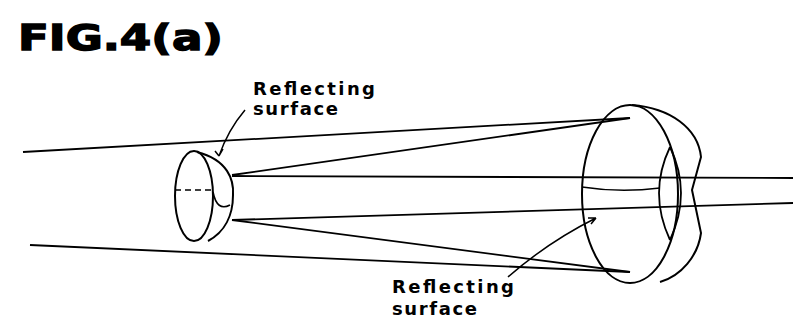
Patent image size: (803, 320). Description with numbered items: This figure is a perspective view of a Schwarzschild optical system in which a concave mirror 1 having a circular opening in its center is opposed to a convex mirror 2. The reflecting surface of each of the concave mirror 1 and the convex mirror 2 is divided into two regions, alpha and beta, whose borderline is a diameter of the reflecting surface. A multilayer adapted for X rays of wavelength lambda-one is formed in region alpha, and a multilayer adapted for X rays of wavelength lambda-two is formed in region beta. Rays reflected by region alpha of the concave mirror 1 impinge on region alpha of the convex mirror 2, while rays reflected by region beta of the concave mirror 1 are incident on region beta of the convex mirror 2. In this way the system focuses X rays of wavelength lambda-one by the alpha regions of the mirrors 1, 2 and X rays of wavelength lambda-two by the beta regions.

The concave mirror 1 is at (690, 134).
The convex mirror 2 is at (192, 151).